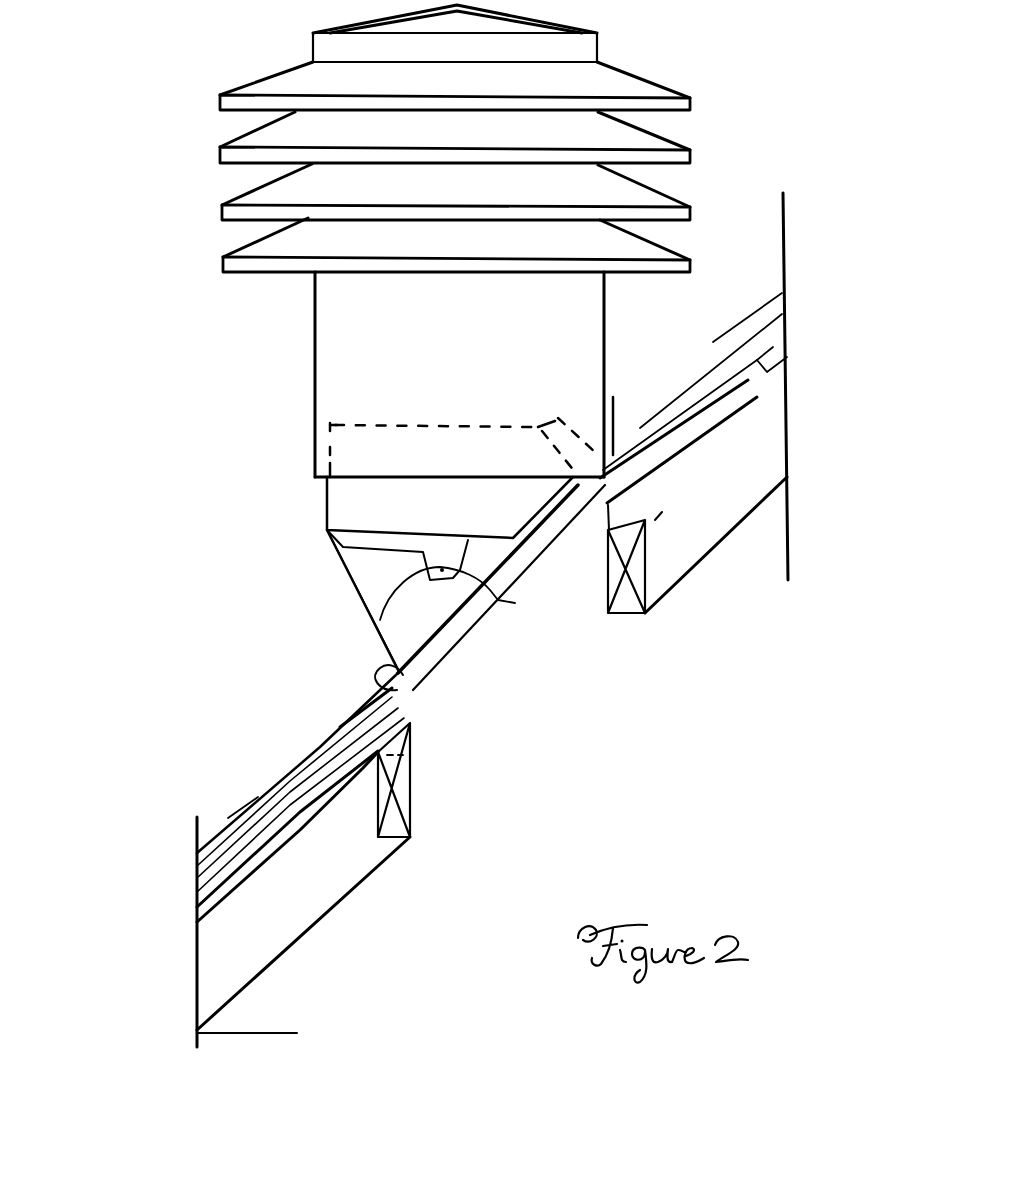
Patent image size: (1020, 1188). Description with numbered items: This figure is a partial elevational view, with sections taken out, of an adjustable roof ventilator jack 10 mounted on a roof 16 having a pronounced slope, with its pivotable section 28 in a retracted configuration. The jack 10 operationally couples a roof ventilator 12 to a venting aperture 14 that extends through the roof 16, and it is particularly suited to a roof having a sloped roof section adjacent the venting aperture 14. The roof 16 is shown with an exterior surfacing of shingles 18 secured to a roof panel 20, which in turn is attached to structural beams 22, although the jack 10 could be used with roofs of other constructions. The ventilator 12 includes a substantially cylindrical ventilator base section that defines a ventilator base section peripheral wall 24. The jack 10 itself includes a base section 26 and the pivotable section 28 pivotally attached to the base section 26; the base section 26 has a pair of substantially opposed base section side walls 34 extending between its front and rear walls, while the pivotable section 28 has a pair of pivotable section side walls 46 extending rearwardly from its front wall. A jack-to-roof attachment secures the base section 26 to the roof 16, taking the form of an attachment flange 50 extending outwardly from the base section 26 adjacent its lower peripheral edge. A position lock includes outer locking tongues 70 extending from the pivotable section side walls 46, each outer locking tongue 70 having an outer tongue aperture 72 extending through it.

The adjustable roof ventilator jack 10 is at (285, 582).
The roof ventilator 12 is at (148, 240).
The venting aperture 14 is at (560, 658).
The roof 16 is at (278, 738).
The shingles 18 is at (222, 833).
The roof panel 20 is at (317, 782).
The structural beams 22 is at (257, 963).
The ventilator base section peripheral wall 24 is at (313, 352).
The base section 26 is at (335, 598).
The pivotable section 28 is at (303, 491).
The base section side walls 34 is at (417, 623).
The pivotable section side walls 46 is at (326, 506).
The attachment flange 50 is at (412, 690).
The outer locking tongues 70 is at (383, 627).
The outer tongue aperture 72 is at (474, 594).